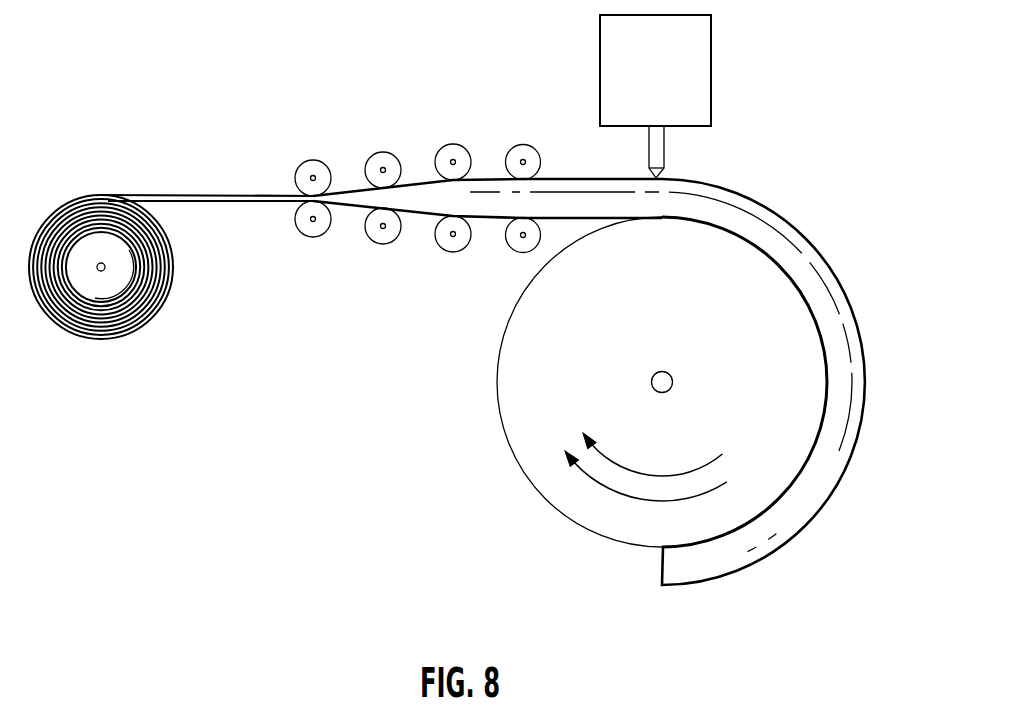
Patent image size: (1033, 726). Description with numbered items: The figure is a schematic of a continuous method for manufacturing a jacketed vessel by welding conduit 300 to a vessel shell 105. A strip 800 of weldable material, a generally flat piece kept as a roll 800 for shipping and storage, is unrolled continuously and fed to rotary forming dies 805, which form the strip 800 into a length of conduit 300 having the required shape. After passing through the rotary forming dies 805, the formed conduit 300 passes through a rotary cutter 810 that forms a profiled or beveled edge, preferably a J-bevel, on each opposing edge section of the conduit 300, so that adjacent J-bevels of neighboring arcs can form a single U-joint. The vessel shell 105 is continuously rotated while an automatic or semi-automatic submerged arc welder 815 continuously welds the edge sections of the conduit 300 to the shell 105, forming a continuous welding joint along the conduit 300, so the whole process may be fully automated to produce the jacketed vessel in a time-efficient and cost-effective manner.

The strip 800 is at (100, 340).
The rotary forming dies 805 is at (312, 160).
The rotary cutter 810 is at (523, 142).
The submerged arc welder 815 is at (680, 85).
The conduit 300 is at (697, 572).
The vessel shell 105 is at (509, 364).